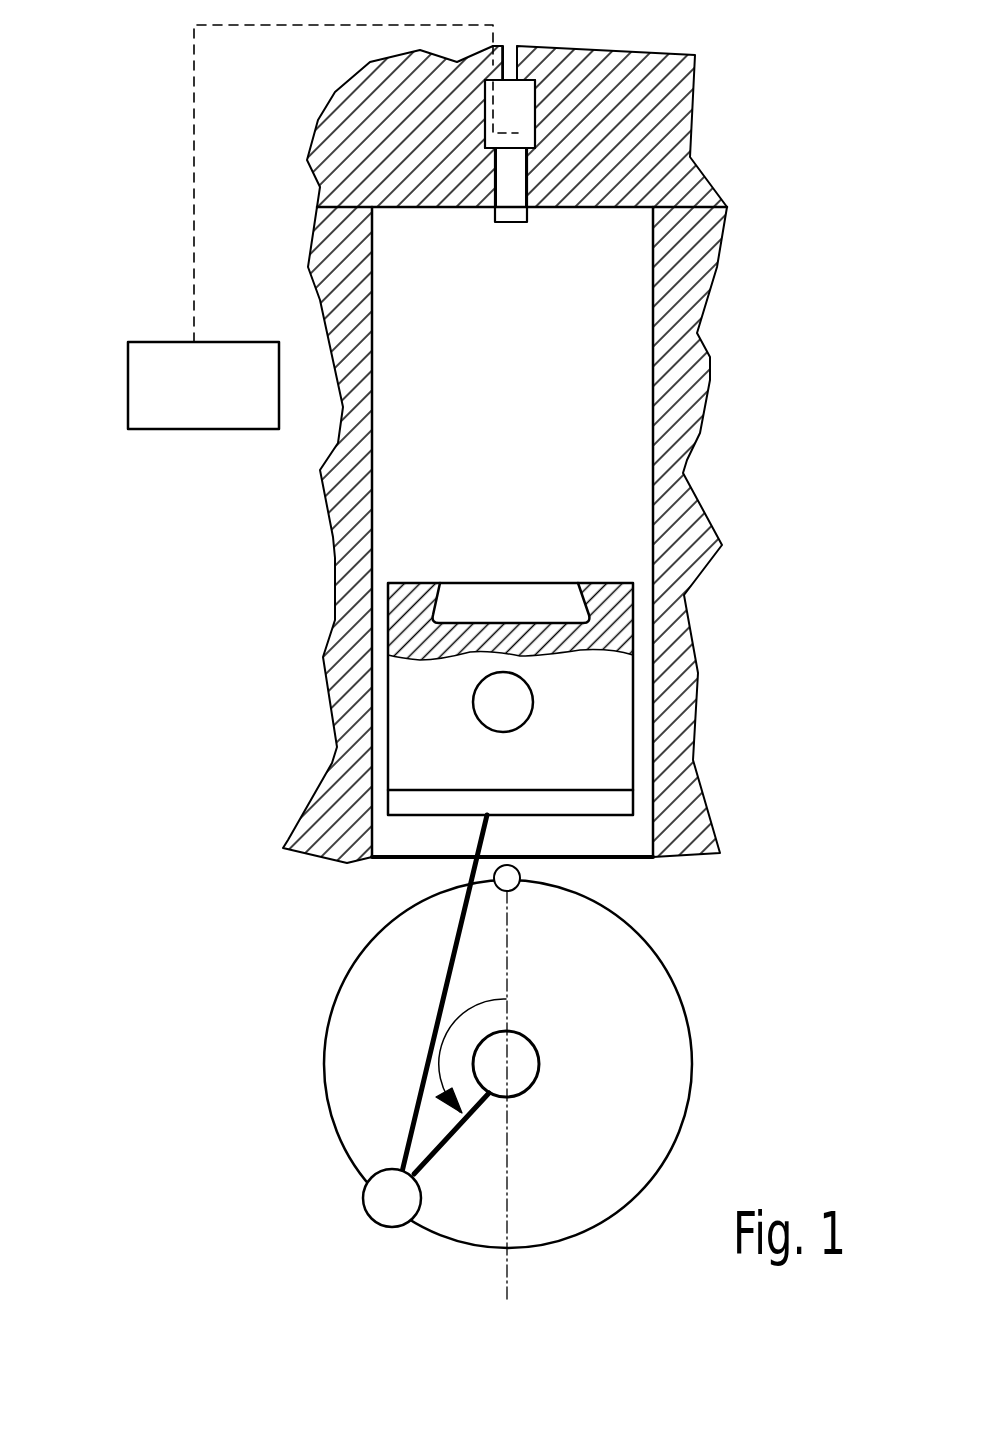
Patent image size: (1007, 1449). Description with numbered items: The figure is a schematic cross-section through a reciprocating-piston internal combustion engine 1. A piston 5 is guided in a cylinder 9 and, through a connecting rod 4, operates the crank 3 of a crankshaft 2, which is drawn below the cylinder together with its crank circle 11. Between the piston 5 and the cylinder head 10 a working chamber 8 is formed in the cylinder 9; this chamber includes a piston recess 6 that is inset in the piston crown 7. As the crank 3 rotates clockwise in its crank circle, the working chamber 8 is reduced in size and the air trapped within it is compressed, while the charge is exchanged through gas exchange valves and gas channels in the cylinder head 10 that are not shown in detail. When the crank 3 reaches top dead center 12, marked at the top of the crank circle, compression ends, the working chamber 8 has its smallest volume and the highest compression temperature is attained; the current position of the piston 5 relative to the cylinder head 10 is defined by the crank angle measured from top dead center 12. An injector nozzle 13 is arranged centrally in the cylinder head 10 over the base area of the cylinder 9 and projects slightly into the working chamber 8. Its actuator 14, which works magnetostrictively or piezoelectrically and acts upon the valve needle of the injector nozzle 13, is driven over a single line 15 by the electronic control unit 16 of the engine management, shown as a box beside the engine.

The reciprocating-piston internal combustion engine 1 is at (765, 228).
The crankshaft 2 is at (528, 1070).
The crank 3 is at (433, 1157).
The connecting rod 4 is at (420, 1085).
The piston 5 is at (427, 755).
The piston recess 6 is at (447, 607).
The piston crown 7 is at (600, 580).
The working chamber 8 is at (393, 500).
The cylinder 9 is at (347, 578).
The cylinder head 10 is at (332, 177).
The flywheel 11 is at (674, 973).
The top dead center 12 is at (521, 877).
The injector nozzle 13 is at (515, 167).
The actuator 14 is at (518, 132).
The single line 15 is at (194, 42).
The electronic control unit 16 is at (173, 356).